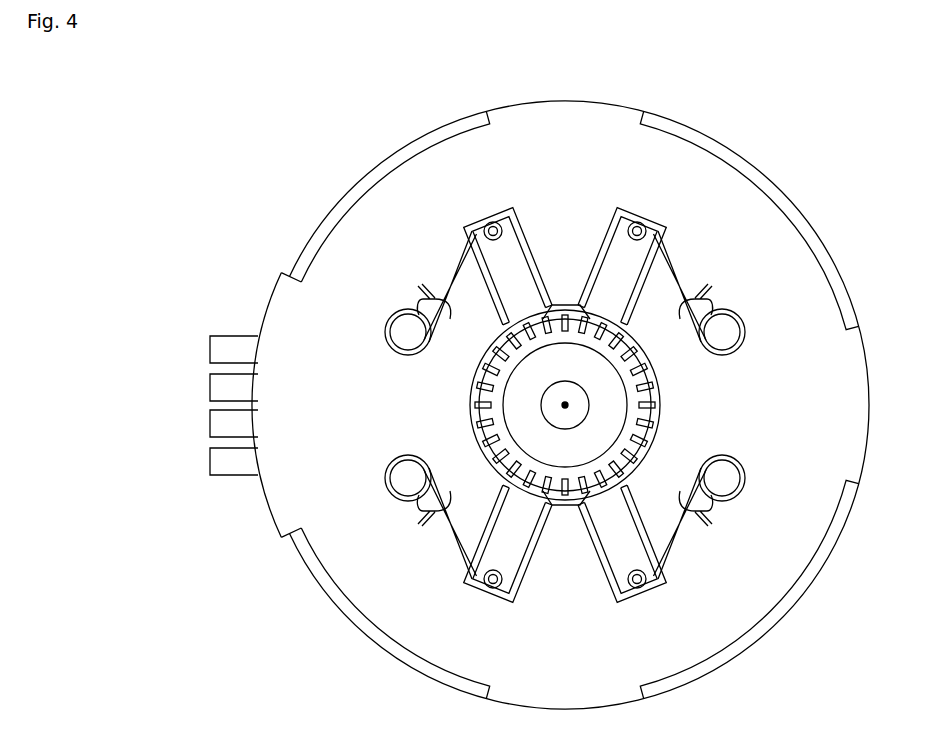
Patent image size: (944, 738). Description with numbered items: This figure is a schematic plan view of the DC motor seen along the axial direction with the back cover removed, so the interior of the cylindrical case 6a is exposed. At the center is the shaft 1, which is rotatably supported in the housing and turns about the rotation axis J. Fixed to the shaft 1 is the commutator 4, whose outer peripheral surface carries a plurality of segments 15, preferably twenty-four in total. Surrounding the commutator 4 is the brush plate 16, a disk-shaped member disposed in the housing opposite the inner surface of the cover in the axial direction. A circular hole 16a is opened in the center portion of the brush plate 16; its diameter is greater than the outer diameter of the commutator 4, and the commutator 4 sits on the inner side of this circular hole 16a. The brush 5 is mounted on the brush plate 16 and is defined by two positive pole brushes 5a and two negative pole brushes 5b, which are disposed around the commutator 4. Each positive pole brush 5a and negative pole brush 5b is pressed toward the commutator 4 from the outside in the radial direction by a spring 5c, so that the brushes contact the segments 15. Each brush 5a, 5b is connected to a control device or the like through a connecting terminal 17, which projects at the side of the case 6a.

The shaft 1 is at (575, 399).
The commutator 4 is at (661, 400).
The brush 5 is at (567, 358).
The positive pole brush 5a is at (623, 243).
The negative pole brush 5b is at (517, 258).
The spring 5c is at (452, 270).
The case 6a is at (818, 226).
The segments 15 is at (470, 392).
The brush plate 16 is at (755, 597).
The circular hole 16a is at (654, 437).
The connecting terminal 17 is at (196, 430).
The rotation axis J is at (567, 419).